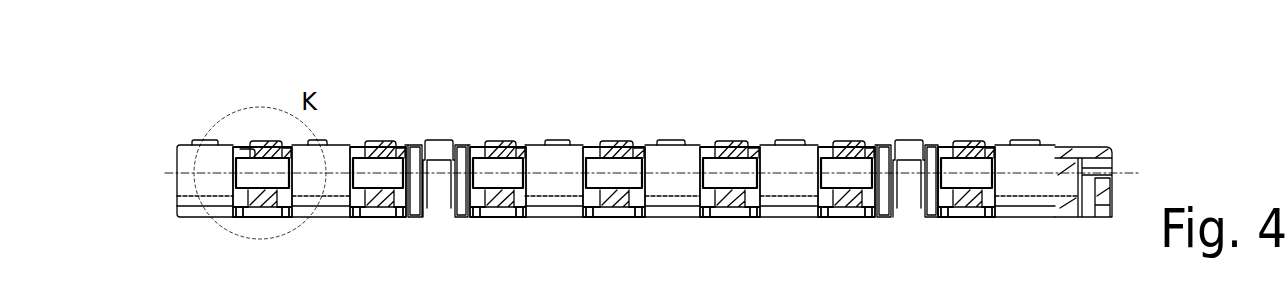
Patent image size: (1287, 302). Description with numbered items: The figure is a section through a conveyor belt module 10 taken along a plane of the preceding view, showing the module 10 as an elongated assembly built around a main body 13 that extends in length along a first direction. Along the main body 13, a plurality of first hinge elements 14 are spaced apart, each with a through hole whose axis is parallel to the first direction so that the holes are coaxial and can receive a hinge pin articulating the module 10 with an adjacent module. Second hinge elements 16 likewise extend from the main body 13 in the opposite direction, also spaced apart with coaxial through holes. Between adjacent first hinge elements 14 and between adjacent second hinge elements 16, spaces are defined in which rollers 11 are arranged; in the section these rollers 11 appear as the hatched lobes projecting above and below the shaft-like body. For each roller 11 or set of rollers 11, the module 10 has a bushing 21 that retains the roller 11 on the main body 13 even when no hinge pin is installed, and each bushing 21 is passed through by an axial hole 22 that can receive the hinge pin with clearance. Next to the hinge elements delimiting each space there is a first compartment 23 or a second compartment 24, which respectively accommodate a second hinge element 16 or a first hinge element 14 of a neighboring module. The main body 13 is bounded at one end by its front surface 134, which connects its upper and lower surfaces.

The module 10 is at (1183, 137).
The roller 11 is at (267, 140).
The main body 13 is at (1105, 144).
The first hinge element 14 is at (238, 200).
The second hinge element 16 is at (613, 221).
The bushing 21 is at (637, 150).
The axial hole 22 is at (250, 152).
The first compartment 23 is at (557, 212).
The second compartment 24 is at (662, 221).
The front surface 134 is at (337, 153).